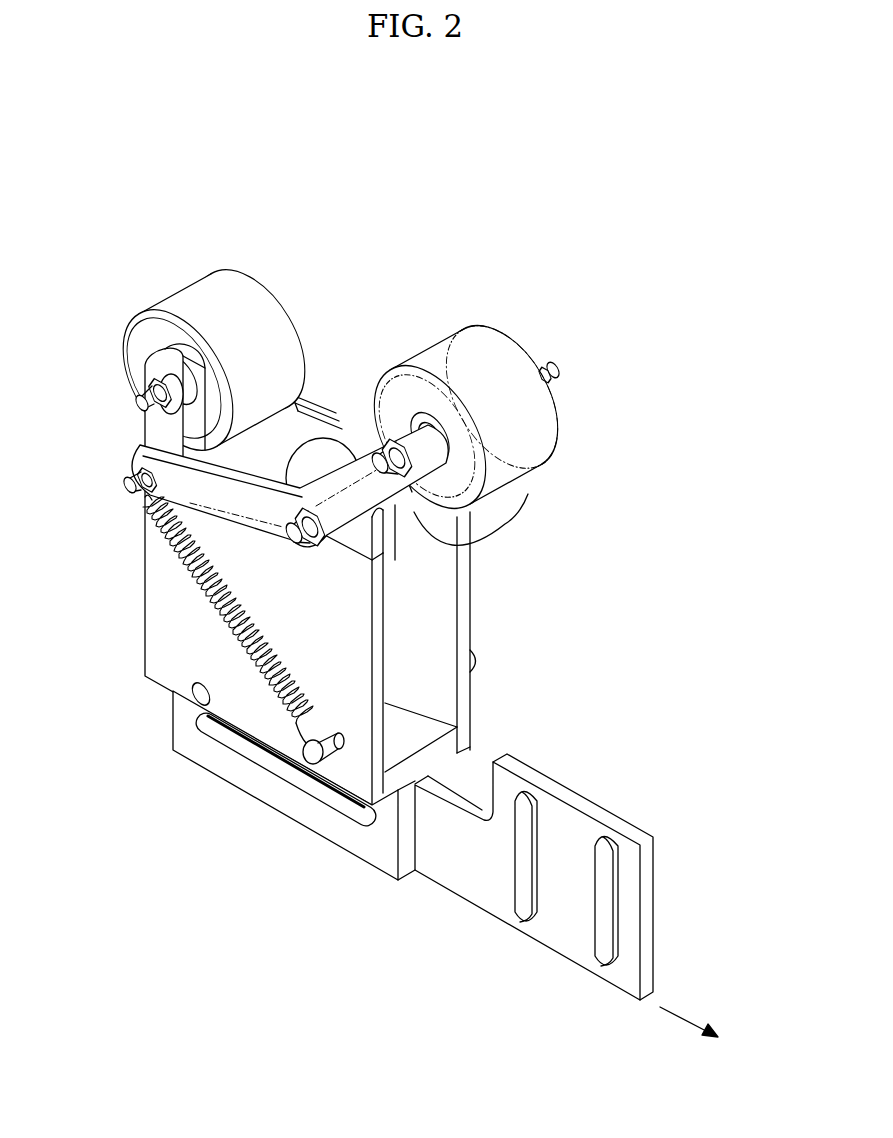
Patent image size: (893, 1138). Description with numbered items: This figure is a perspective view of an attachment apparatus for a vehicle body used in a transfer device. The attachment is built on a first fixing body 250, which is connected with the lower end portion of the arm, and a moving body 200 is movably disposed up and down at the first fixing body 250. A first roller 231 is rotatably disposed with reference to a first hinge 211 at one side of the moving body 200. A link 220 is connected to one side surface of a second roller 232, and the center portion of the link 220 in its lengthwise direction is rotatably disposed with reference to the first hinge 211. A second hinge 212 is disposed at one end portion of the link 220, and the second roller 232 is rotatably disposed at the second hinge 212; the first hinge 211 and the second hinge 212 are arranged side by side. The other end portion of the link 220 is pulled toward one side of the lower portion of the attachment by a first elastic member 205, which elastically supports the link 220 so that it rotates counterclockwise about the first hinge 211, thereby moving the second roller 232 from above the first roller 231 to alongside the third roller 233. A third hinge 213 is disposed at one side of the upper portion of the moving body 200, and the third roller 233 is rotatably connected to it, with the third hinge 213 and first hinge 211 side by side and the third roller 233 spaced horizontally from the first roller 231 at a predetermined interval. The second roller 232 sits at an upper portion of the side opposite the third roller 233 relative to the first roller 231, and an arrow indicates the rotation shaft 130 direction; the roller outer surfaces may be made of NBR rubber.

The rotation shaft 130 is at (707, 1036).
The moving body 200 is at (157, 658).
The first elastic member 205 is at (263, 690).
The first hinge 211 is at (471, 602).
The second hinge 212 is at (470, 508).
The third hinge 213 is at (135, 404).
The link 220 is at (450, 542).
The first roller 231 is at (337, 440).
The second roller 232 is at (468, 336).
The third roller 233 is at (146, 323).
The first fixing body 250 is at (293, 803).